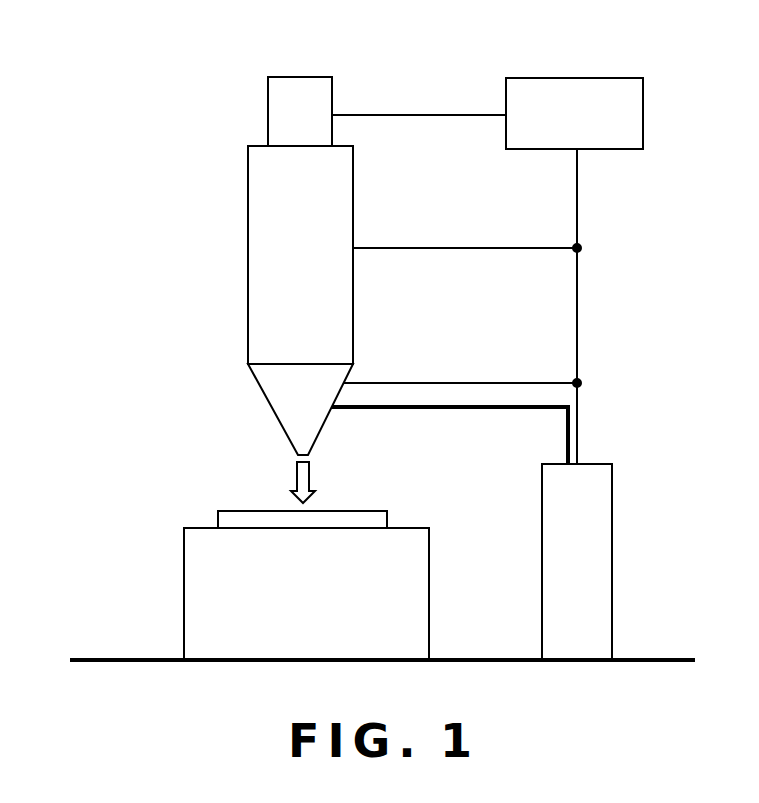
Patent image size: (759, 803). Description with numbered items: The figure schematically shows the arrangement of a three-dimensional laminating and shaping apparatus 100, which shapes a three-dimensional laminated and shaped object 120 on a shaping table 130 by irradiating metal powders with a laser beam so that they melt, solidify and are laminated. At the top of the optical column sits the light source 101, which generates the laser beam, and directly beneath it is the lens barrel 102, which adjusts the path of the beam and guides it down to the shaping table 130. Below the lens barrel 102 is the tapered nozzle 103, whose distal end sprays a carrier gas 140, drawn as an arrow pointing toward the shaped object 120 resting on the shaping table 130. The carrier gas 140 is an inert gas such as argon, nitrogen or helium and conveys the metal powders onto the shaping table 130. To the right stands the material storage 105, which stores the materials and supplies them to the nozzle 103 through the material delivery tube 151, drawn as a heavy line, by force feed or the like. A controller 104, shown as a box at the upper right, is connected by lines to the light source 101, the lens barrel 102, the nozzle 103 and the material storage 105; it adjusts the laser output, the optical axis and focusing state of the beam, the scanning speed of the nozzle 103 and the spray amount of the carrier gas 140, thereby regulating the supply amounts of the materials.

The three-dimensional laminating and shaping apparatus 100 is at (138, 107).
The light source 101 is at (268, 115).
The lens barrel 102 is at (248, 229).
The nozzle 103 is at (269, 409).
The controller 104 is at (643, 112).
The material storage 105 is at (612, 538).
The three-dimensional laminated and shaped object 120 is at (237, 510).
The shaping table 130 is at (184, 561).
The carrier gas 140 is at (312, 484).
The material delivery tube 151 is at (448, 410).